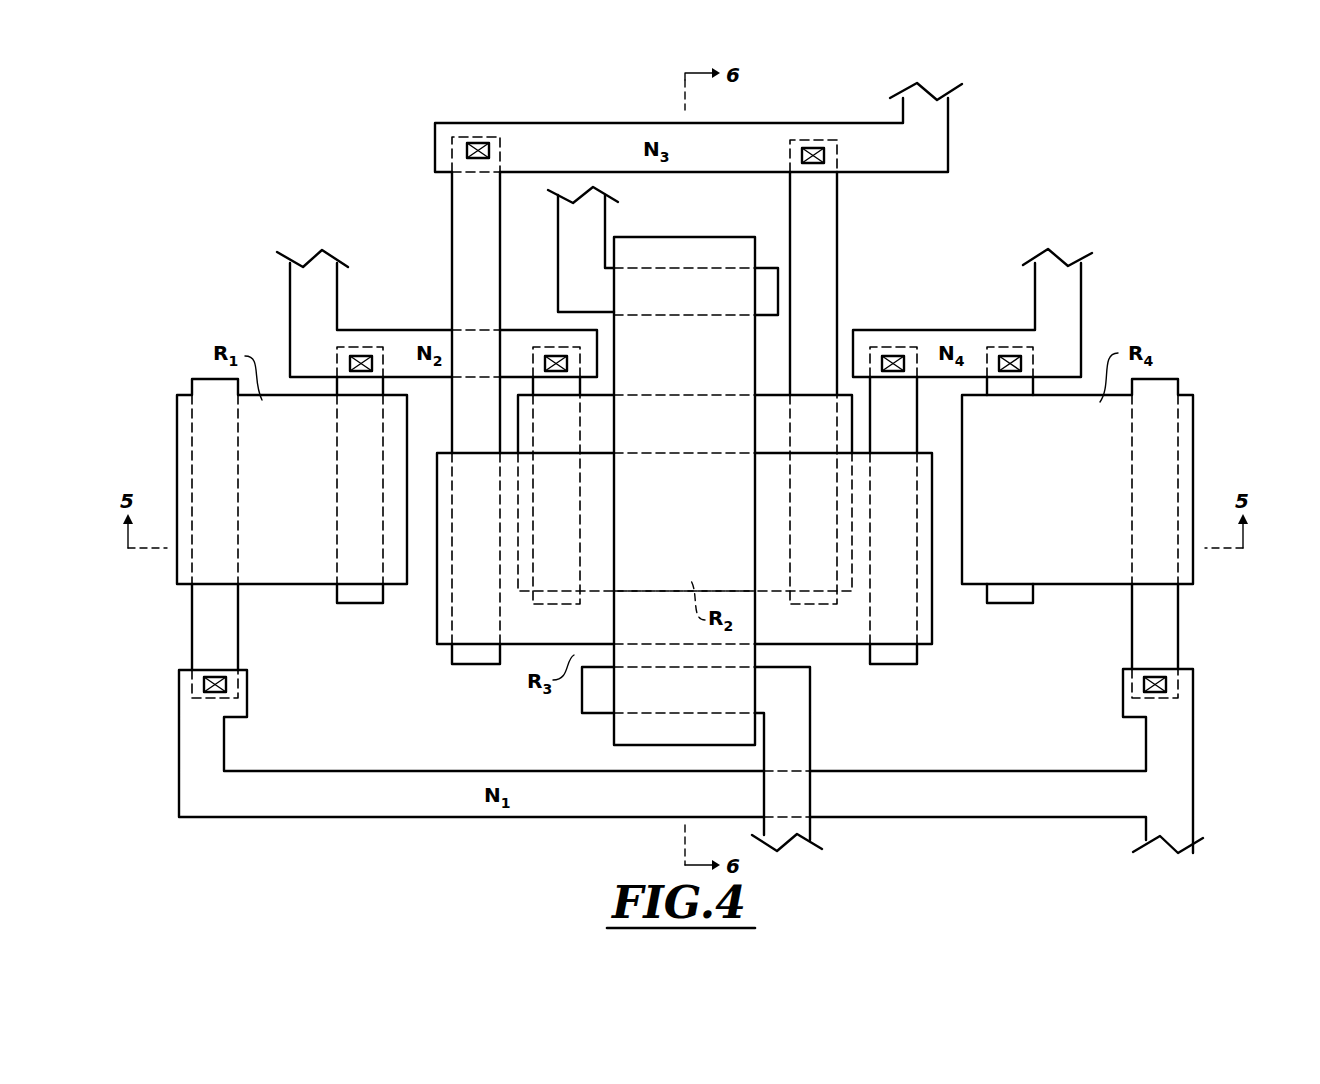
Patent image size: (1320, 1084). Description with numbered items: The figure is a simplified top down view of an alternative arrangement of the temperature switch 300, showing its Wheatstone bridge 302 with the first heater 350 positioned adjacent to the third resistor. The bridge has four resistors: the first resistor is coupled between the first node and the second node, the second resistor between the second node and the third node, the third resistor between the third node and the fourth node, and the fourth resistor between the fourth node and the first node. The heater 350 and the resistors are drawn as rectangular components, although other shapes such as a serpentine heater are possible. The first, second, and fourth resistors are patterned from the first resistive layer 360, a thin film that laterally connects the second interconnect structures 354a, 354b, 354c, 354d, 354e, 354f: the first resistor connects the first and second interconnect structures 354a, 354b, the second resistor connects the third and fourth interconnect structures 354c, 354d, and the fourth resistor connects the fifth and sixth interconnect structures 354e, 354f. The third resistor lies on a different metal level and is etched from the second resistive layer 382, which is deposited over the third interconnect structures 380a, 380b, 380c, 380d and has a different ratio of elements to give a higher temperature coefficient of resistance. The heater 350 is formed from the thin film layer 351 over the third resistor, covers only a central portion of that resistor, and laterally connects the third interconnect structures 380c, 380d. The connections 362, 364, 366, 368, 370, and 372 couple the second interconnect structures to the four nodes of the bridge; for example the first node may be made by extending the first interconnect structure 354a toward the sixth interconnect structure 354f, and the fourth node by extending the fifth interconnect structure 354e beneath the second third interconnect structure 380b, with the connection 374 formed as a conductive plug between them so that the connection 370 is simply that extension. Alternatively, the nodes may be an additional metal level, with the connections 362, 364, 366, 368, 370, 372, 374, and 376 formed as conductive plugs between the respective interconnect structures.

The temperature switch 300 is at (1152, 207).
The Wheatstone bridge 302 is at (1218, 417).
The first heater 350 is at (627, 728).
The thin film layer 351 is at (724, 242).
The first one of the second interconnect structures 354a is at (203, 615).
The second one of the second interconnect structures 354b is at (357, 595).
The third one of the second interconnect structures 354c is at (565, 522).
The fourth one of the second interconnect structures 354d is at (838, 258).
The fifth one of the second interconnect structures 354e is at (1012, 595).
The sixth one of the second interconnect structures 354f is at (1166, 615).
The first resistive layer 360 is at (178, 456).
The connection 362 is at (222, 690).
The connection 364 is at (361, 355).
The connection 366 is at (556, 355).
The connection 368 is at (815, 147).
The connection 370 is at (1010, 355).
The connection 372 is at (1146, 690).
The connection 374 is at (893, 355).
The connection 376 is at (480, 142).
The first one of the third interconnect structures 380a is at (450, 655).
The second one of the third interconnect structures 380b is at (917, 655).
The third one of the third interconnect structures 380c is at (800, 728).
The fourth one of the third interconnect structures 380d is at (590, 231).
The second resistive layer 382 is at (440, 610).